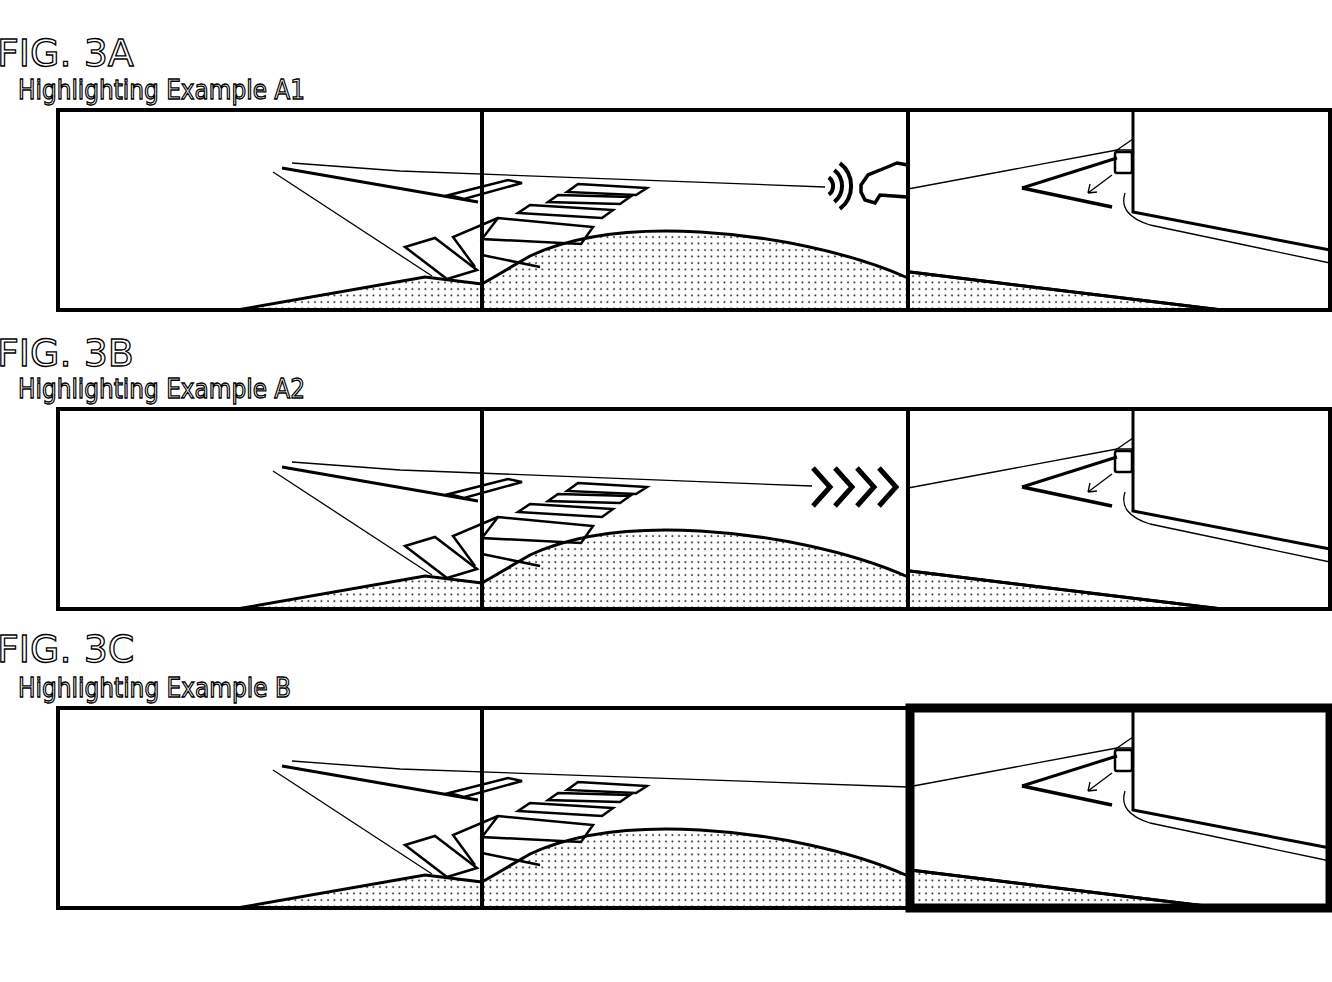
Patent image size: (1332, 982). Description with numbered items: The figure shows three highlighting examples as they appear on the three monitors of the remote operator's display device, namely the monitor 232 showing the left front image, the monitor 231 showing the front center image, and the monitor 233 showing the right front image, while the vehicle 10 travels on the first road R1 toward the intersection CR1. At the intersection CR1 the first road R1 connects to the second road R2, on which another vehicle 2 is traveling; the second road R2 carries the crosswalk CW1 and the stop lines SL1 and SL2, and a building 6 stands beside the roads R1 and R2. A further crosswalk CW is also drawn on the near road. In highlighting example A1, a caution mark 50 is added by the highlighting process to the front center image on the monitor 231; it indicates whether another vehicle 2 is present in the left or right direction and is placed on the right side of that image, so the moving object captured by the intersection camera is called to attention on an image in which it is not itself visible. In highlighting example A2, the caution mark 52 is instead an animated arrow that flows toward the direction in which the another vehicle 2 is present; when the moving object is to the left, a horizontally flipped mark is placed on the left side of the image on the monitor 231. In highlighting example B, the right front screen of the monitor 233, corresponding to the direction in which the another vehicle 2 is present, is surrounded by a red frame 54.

In FIG. 3A, the monitor 232 is at (340, 109).
In FIG. 3B, the monitor 232 is at (270, 490).
In FIG. 3C, the monitor 232 is at (270, 789).
In FIG. 3A, the monitor 231 is at (735, 109).
In FIG. 3B, the monitor 231 is at (695, 490).
In FIG. 3C, the monitor 231 is at (695, 789).
In FIG. 3A, the monitor 233 is at (1240, 109).
In FIG. 3B, the monitor 233 is at (1119, 490).
In FIG. 3C, the monitor 233 is at (1119, 789).
In FIG. 3A, the vehicle 10 is at (433, 293).
In FIG. 3B, the vehicle 10 is at (729, 590).
In FIG. 3C, the vehicle 10 is at (729, 889).
In FIG. 3A, the crosswalk CW is at (412, 257).
In FIG. 3B, the crosswalk CW is at (385, 558).
In FIG. 3C, the crosswalk CW is at (385, 857).
In FIG. 3A, the crosswalk CW1 is at (557, 198).
In FIG. 3B, the crosswalk CW1 is at (564, 468).
In FIG. 3C, the crosswalk CW1 is at (564, 767).
In FIG. 3A, the intersection CR1 is at (705, 207).
In FIG. 3B, the intersection CR1 is at (627, 443).
In FIG. 3C, the intersection CR1 is at (627, 742).
In FIG. 3A, the stop line SL2 is at (463, 187).
In FIG. 3B, the stop line SL2 is at (477, 434).
In FIG. 3C, the stop line SL2 is at (477, 733).
In FIG. 3A, the stop line SL1 is at (1070, 193).
In FIG. 3B, the stop line SL1 is at (1067, 438).
In FIG. 3C, the stop line SL1 is at (1067, 737).
In FIG. 3A, the second road R2 is at (1030, 174).
In FIG. 3B, the second road R2 is at (1012, 429).
In FIG. 3C, the second road R2 is at (1012, 728).
In FIG. 3A, the first road R1 is at (1250, 277).
In FIG. 3B, the first road R1 is at (1085, 610).
In FIG. 3C, the first road R1 is at (1085, 909).
In FIG. 3A, the another vehicle 2 is at (1118, 146).
In FIG. 3B, the another vehicle 2 is at (1110, 430).
In FIG. 3C, the another vehicle 2 is at (1110, 729).
In FIG. 3A, the building 6 is at (1172, 134).
In FIG. 3B, the building 6 is at (1227, 465).
In FIG. 3C, the building 6 is at (1227, 764).
In FIG. 3A, the caution mark 50 is at (869, 145).
In FIG. 3B, the caution mark 52 is at (854, 438).
In FIG. 3C, the red frame 54 is at (1074, 773).